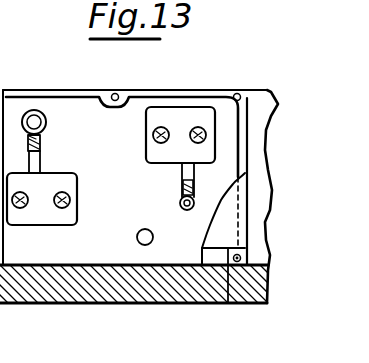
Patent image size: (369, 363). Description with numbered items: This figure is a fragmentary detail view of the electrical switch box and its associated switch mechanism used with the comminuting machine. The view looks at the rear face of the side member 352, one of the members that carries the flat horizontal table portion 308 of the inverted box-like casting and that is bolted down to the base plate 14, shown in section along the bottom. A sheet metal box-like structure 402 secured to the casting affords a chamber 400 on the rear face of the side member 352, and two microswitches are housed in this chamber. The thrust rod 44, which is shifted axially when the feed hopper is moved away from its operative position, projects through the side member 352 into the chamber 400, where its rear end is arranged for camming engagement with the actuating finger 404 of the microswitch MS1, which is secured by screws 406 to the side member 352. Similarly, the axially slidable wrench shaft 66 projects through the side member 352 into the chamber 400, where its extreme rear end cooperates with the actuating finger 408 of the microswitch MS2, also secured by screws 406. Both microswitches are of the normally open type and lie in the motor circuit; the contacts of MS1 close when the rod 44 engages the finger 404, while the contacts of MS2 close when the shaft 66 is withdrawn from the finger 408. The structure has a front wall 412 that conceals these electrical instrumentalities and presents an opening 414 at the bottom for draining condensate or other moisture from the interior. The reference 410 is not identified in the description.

The base plate 14 is at (70, 298).
The thrust rod 44 is at (188, 211).
The wrench shaft 66 is at (35, 121).
The table portion 308 is at (143, 88).
The side member 352 is at (257, 104).
The chamber 400 is at (77, 110).
The sheet metal box-like structure 402 is at (221, 245).
The actuating finger 404 is at (178, 189).
The screws 406 is at (23, 197).
The actuating finger 408 is at (41, 143).
The terminal screws 410 is at (198, 126).
The front wall 412 is at (233, 300).
The opening 414 is at (205, 254).
The microswitch MS1 is at (155, 153).
The microswitch MS2 is at (33, 221).